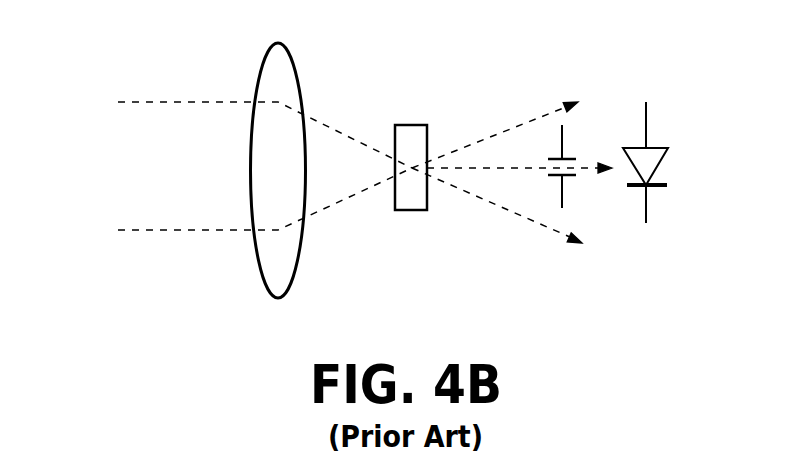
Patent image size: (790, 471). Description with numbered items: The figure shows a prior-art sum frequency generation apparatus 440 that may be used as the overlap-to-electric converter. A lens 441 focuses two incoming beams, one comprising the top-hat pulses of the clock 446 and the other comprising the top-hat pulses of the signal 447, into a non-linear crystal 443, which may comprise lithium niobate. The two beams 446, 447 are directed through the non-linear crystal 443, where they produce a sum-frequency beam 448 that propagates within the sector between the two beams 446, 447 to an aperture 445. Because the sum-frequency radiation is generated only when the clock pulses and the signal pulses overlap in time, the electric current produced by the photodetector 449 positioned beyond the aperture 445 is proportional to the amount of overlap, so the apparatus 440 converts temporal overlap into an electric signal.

The sum frequency generation apparatus 440 is at (425, 51).
The lens 441 is at (298, 250).
The non-linear crystal 443 is at (408, 210).
The aperture 445 is at (565, 182).
The clock top-hat pulse beam 446 is at (157, 103).
The signal top-hat pulse beam 447 is at (180, 229).
The sum-frequency beam 448 is at (472, 170).
The photodetector 449 is at (662, 163).